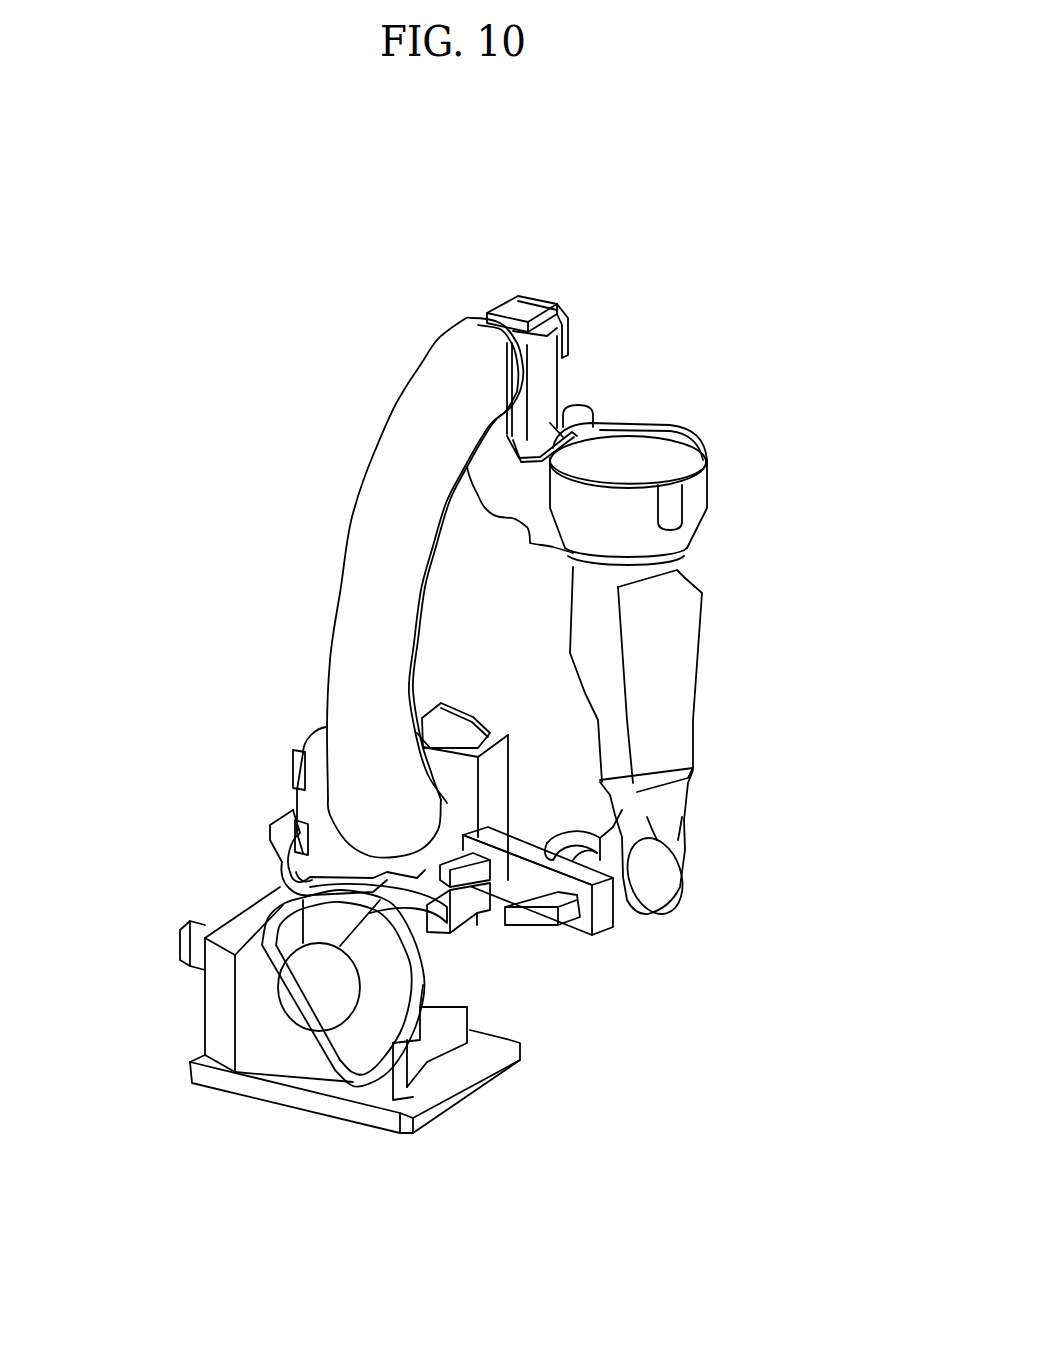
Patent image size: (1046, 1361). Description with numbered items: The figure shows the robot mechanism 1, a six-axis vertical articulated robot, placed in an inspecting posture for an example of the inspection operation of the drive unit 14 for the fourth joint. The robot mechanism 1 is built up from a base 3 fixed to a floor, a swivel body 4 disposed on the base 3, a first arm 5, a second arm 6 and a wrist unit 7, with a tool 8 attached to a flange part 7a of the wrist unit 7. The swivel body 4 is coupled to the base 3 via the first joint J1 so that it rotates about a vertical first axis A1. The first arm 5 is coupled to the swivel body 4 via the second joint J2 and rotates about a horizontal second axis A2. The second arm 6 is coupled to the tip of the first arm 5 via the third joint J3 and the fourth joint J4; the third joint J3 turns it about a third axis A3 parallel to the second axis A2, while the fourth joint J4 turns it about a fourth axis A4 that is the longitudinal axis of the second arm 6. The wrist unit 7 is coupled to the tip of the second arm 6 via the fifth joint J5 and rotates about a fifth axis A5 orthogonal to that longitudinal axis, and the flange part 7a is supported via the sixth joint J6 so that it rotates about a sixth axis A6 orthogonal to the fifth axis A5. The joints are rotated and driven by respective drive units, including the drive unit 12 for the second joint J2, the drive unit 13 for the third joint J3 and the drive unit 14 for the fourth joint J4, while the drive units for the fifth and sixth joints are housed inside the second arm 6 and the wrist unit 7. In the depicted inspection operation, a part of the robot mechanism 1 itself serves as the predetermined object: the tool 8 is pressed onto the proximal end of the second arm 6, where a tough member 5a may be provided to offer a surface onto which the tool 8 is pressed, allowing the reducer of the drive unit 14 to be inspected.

The robot mechanism 1 is at (243, 372).
The base 3 is at (207, 1000).
The swivel body 4 is at (268, 868).
The first arm 5 is at (345, 547).
The tough member 5a is at (500, 730).
The second arm 6 is at (680, 665).
The wrist unit 7 is at (578, 830).
The flange part 7a is at (560, 830).
The tool 8 is at (578, 937).
The drive unit 12 is at (445, 716).
The drive unit 13 is at (505, 318).
The drive unit 14 is at (694, 493).
The first joint J1 is at (262, 886).
The second joint J2 is at (472, 700).
The third joint J3 is at (522, 300).
The fourth joint J4 is at (705, 448).
The fifth joint J5 is at (655, 925).
The sixth joint J6 is at (565, 800).
The first axis A1 is at (358, 1133).
The second axis A2 is at (380, 803).
The third axis A3 is at (462, 375).
The fourth axis A4 is at (628, 462).
The fifth axis A5 is at (660, 882).
The sixth axis A6 is at (525, 885).